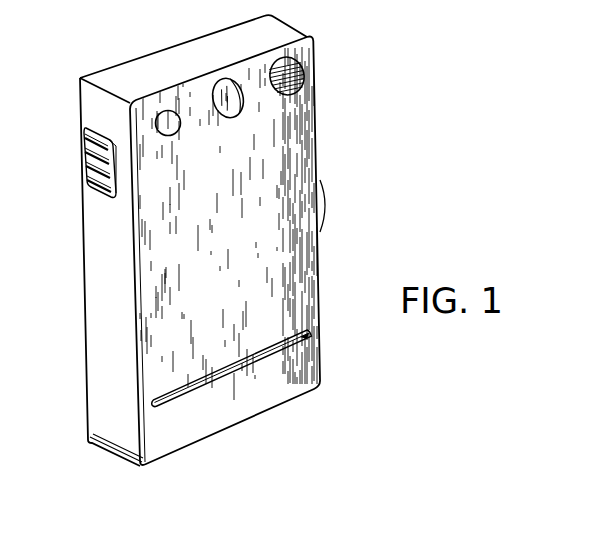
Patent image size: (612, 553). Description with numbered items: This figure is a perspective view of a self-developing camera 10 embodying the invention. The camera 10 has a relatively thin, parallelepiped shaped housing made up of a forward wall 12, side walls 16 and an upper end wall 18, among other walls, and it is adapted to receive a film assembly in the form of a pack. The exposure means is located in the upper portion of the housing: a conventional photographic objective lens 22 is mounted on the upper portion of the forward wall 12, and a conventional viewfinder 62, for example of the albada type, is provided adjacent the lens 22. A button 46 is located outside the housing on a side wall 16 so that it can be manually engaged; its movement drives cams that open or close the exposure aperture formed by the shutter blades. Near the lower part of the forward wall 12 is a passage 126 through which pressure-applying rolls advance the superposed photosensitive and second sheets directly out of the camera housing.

The camera 10 is at (340, 247).
The forward wall 12 is at (298, 138).
The side walls 16 is at (107, 283).
The upper end wall 18 is at (138, 72).
The photographic objective lens 22 is at (232, 78).
The button 46 is at (87, 182).
The viewfinder 62 is at (297, 72).
The passage 126 is at (284, 347).